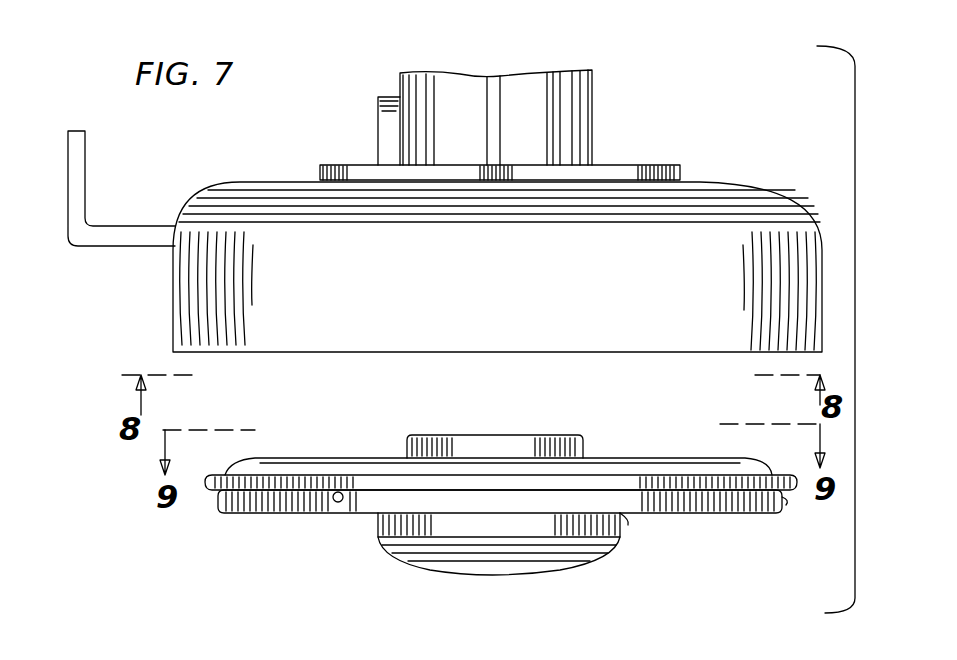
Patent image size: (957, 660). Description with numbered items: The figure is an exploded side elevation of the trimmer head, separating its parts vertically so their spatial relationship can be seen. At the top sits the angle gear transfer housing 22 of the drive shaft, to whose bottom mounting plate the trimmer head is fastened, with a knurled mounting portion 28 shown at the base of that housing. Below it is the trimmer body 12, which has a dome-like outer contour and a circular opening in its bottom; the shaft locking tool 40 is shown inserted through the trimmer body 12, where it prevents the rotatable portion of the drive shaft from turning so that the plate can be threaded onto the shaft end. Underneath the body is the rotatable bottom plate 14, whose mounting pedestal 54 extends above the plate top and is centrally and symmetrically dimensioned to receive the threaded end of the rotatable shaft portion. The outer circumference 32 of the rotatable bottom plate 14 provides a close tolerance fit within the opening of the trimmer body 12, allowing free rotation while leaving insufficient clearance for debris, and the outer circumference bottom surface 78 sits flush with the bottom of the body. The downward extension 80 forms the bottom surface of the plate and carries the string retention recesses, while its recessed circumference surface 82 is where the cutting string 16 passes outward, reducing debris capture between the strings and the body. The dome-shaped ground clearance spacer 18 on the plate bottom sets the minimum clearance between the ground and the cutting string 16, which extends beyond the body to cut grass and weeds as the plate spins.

The trimmer body 12 is at (172, 297).
The rotatable bottom plate 14 is at (262, 515).
The cutting string 16 is at (339, 503).
The ground clearance spacer 18 is at (440, 567).
The angle gear transfer housing 22 is at (592, 110).
The knurled strip 28 is at (663, 165).
The outer circumference 32 is at (203, 484).
The shaft locking tool 40 is at (137, 226).
The mounting pedestal 54 is at (583, 448).
The outer circumference bottom surface 78 is at (208, 492).
The downward extension 80 is at (783, 500).
The recessed circumference surface 82 is at (627, 503).